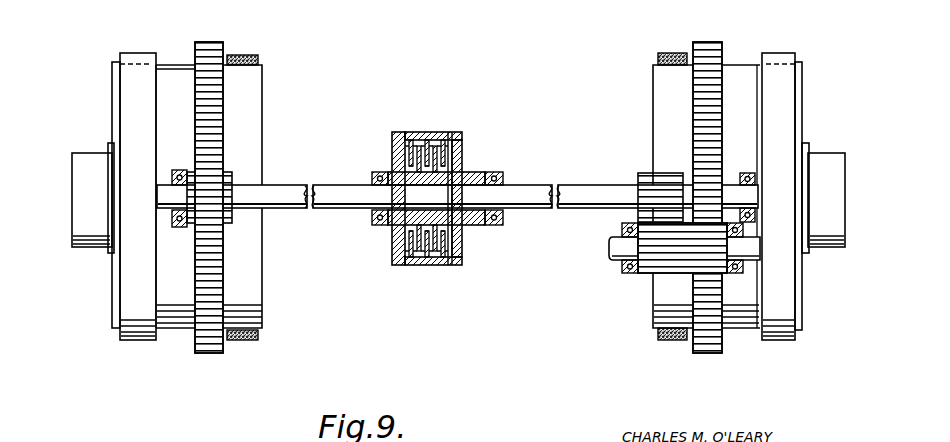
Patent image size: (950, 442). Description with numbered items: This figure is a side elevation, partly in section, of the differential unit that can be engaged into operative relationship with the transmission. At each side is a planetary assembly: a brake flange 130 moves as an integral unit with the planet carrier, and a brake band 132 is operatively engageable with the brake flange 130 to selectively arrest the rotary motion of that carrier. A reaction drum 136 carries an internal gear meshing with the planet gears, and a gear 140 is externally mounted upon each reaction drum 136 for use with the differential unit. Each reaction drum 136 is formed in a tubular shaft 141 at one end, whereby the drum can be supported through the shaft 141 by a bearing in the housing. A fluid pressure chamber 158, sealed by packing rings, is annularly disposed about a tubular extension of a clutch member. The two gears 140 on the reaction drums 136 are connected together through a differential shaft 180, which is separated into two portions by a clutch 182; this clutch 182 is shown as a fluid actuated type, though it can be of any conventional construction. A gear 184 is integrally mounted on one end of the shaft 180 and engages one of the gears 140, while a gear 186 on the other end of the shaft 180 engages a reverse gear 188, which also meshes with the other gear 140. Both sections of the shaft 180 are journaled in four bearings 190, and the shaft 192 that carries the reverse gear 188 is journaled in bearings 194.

The brake flange 130 is at (250, 93).
The brake band 132 is at (248, 55).
The reaction drum 136 is at (169, 70).
The gear 140 is at (207, 42).
The tubular shaft 141 is at (86, 155).
The fluid pressure chamber 158 is at (130, 70).
The differential shaft 180 is at (537, 184).
The clutch 182 is at (446, 129).
The gear 184 is at (232, 178).
The gear 186 is at (645, 173).
The reverse gear 188 is at (647, 265).
The bearings 190 is at (178, 170).
The shaft 192 is at (612, 248).
The bearings 194 is at (625, 275).